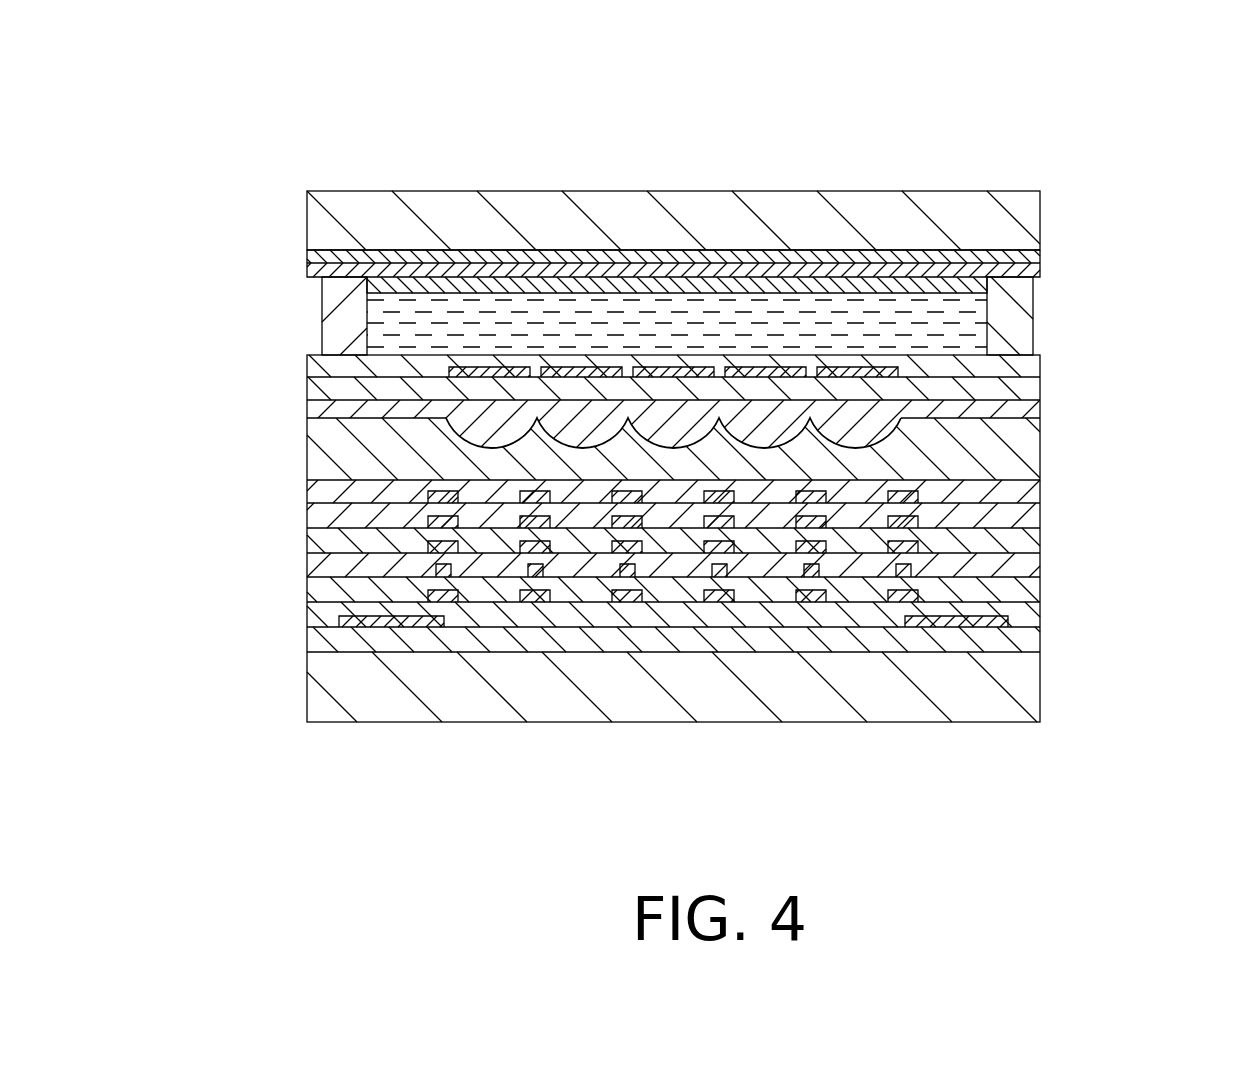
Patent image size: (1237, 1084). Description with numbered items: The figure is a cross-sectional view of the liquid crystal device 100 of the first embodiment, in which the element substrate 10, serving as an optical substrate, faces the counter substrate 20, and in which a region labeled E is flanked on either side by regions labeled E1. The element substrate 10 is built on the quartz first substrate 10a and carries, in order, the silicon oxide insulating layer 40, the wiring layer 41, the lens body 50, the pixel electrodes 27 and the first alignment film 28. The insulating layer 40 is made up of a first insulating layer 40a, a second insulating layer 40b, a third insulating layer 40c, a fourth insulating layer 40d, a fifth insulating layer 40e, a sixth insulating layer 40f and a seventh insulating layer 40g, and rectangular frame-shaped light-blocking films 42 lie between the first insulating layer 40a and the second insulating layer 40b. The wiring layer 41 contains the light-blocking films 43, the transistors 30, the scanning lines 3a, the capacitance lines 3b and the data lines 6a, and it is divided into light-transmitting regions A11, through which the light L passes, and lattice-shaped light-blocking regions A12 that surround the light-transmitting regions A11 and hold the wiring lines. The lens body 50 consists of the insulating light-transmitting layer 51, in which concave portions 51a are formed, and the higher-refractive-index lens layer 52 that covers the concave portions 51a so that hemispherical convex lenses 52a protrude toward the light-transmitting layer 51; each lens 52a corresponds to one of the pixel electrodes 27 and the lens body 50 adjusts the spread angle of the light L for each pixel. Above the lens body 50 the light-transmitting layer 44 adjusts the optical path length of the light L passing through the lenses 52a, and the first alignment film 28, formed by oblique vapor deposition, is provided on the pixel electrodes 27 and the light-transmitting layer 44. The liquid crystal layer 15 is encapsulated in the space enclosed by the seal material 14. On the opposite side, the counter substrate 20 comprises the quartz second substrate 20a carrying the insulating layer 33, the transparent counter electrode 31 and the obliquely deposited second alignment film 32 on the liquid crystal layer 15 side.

The liquid crystal device 100 is at (1167, 78).
The display region E is at (448, 168).
The peripheral region E1 is at (448, 168).
The counter substrate 20 is at (1175, 192).
The second substrate 20a is at (1040, 204).
The insulating layer 33 is at (1040, 258).
The counter electrode 31 is at (1040, 272).
The second alignment film 32 is at (948, 288).
The seal material 14 is at (1025, 334).
The liquid crystal layer 15 is at (395, 306).
The pixel electrodes 27 is at (672, 367).
The first alignment film 28 is at (1035, 368).
The light-transmitting layer 44 is at (322, 393).
The lens body 50 is at (1118, 400).
The lens layer 52 is at (1035, 410).
The lenses 52a is at (652, 443).
The light-transmitting layer 51 is at (1035, 443).
The concave portions 51a is at (870, 446).
The element substrate 10 is at (1178, 355).
The first substrate 10a is at (1035, 684).
The insulating layer 40 is at (232, 482).
The first insulating layer 40a is at (322, 640).
The second insulating layer 40b is at (322, 615).
The third insulating layer 40c is at (322, 590).
The fourth insulating layer 40d is at (322, 565).
The fifth insulating layer 40e is at (322, 540).
The sixth insulating layer 40f is at (322, 515).
The seventh insulating layer 40g is at (322, 492).
The wiring layer 41 is at (1118, 481).
The data lines 6a is at (923, 491).
The capacitance lines 3b is at (923, 515).
The scanning lines 3a is at (923, 542).
The transistors 30 is at (906, 566).
The light-blocking films 43 is at (923, 592).
The light-blocking films 42 is at (1005, 618).
The light-transmitting regions A11 is at (734, 602).
The light-blocking regions A12 is at (826, 602).
The light L is at (674, 762).